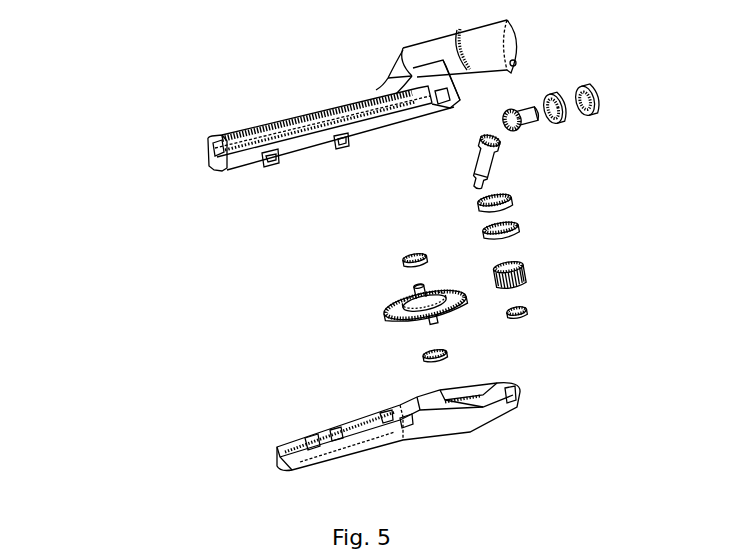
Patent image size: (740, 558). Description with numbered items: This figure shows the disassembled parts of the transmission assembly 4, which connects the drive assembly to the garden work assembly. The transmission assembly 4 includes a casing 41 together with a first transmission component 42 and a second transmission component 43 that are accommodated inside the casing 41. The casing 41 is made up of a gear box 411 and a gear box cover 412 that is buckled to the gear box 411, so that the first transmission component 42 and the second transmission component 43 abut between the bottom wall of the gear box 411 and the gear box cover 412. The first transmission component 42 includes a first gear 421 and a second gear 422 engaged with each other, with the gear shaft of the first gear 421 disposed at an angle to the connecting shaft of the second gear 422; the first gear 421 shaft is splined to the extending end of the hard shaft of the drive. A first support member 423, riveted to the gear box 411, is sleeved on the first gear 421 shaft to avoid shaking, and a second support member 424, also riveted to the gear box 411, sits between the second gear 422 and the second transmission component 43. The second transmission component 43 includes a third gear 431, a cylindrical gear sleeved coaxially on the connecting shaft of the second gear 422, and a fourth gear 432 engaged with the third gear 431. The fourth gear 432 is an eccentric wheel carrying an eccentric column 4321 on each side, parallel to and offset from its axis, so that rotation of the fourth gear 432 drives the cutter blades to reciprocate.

The transmission assembly 4 is at (80, 68).
The casing 41 is at (70, 290).
The gear box 411 is at (207, 152).
The gear box cover 412 is at (273, 455).
The first transmission component 42 is at (527, 163).
The first gear 421 is at (528, 110).
The second gear 422 is at (468, 135).
The first support member 423 is at (597, 83).
The second support member 424 is at (522, 232).
The second transmission component 43 is at (463, 265).
The third gear 431 is at (528, 283).
The fourth gear 432 is at (383, 317).
The eccentric column 4321 is at (402, 297).